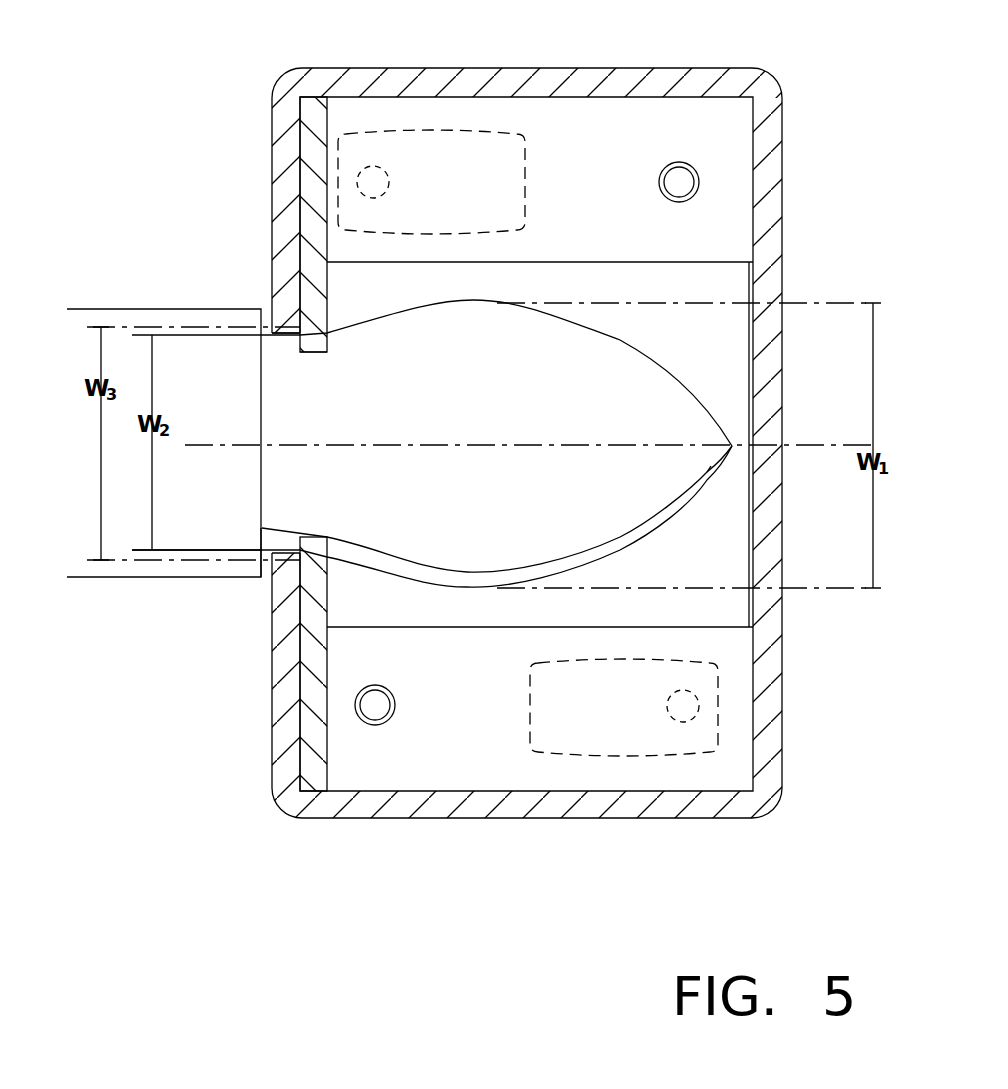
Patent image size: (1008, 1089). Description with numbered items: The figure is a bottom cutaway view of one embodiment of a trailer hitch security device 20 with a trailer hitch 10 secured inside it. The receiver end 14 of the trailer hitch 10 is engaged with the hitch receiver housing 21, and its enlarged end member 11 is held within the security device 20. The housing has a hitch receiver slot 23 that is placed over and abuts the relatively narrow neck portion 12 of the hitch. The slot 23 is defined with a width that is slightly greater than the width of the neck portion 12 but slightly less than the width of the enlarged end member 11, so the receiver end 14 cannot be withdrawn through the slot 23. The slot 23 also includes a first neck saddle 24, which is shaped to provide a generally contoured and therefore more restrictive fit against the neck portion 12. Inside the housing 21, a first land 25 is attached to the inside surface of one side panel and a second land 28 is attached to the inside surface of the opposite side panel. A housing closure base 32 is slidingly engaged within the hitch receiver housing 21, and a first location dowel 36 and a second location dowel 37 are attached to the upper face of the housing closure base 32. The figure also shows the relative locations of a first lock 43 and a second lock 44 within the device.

The trailer hitch 10 is at (668, 360).
The enlarged end member 11 is at (480, 585).
The relatively narrow neck portion 12 is at (267, 547).
The receiver end 14 is at (720, 460).
The trailer hitch security device 20 is at (229, 50).
The hitch receiver housing 21 is at (597, 65).
The hitch receiver slot 23 is at (282, 328).
The first neck saddle 24 is at (324, 354).
The first land 25 is at (357, 255).
The second land 28 is at (357, 630).
The housing closure base 32 is at (686, 282).
The first location dowel 36 is at (679, 180).
The second location dowel 37 is at (372, 698).
The first lock 43 is at (528, 150).
The second lock 44 is at (522, 734).